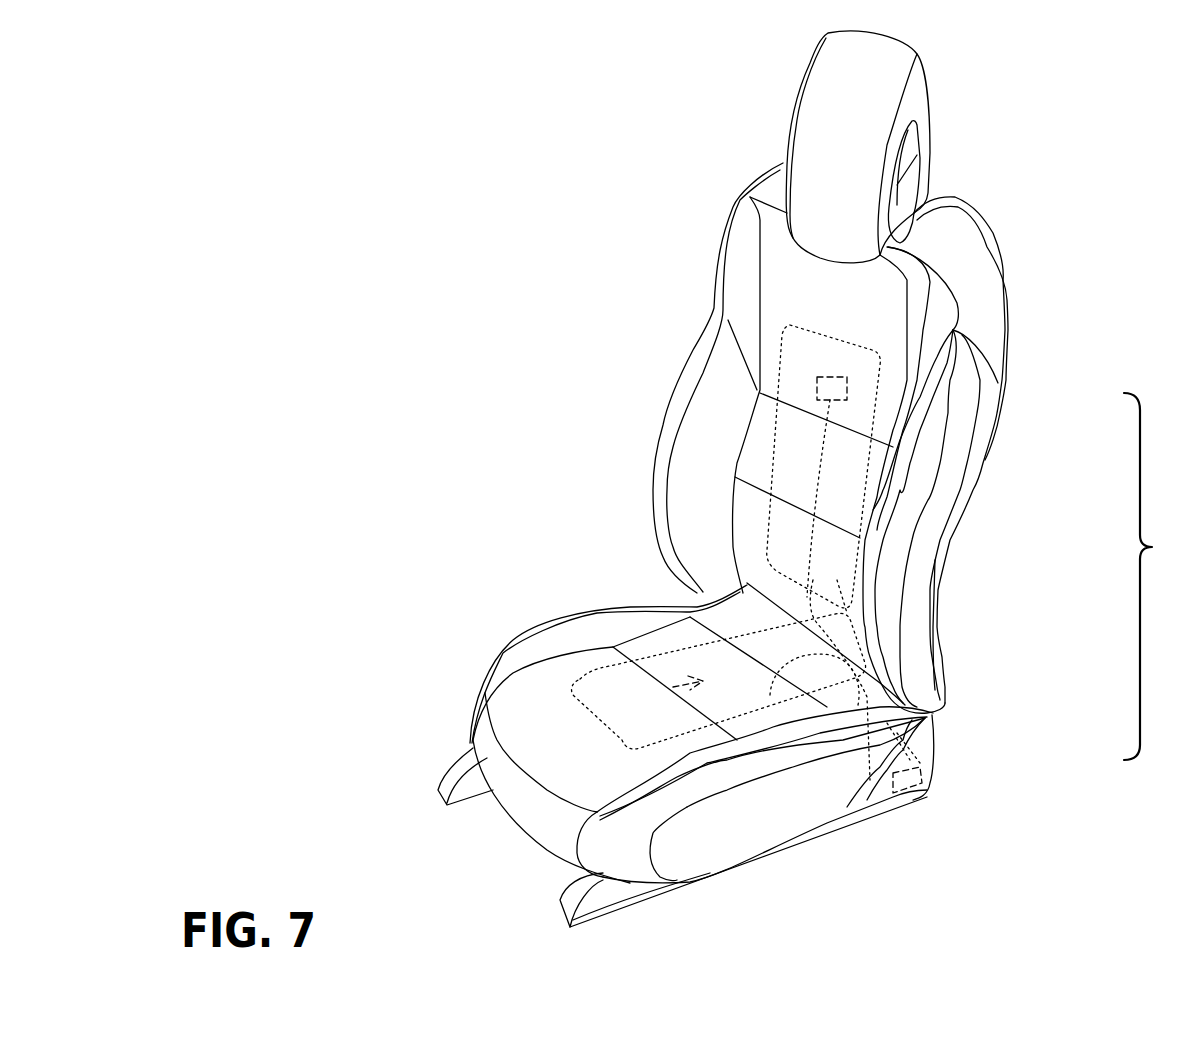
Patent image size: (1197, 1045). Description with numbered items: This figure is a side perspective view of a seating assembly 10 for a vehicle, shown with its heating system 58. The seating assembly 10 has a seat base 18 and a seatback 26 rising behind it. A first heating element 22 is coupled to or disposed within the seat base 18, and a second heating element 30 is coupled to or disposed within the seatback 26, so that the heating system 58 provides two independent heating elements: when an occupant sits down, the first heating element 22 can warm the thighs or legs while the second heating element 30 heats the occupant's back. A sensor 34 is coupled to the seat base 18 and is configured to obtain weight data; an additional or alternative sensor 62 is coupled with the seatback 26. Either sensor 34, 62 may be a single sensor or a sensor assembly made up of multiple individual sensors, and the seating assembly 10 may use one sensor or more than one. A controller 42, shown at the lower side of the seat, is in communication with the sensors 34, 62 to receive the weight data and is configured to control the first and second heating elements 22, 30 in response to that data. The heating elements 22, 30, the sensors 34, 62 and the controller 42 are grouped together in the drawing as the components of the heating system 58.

The seating assembly 10 is at (1026, 212).
The seat base 18 is at (552, 637).
The seatback 26 is at (697, 410).
The second heating element 30 is at (847, 507).
The sensor 62 is at (847, 390).
The sensor 34 is at (673, 687).
The first heating element 22 is at (767, 693).
The controller 42 is at (943, 770).
The heating system 58 is at (1157, 576).